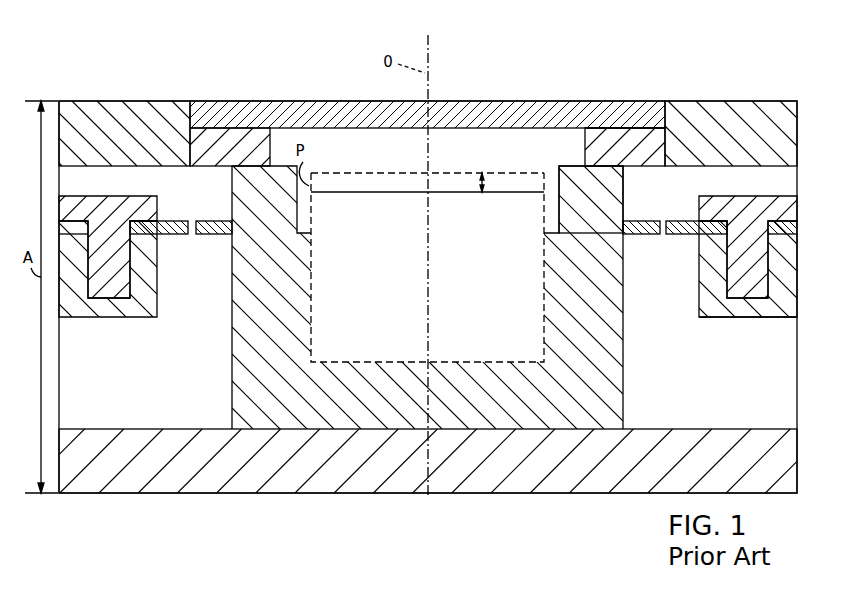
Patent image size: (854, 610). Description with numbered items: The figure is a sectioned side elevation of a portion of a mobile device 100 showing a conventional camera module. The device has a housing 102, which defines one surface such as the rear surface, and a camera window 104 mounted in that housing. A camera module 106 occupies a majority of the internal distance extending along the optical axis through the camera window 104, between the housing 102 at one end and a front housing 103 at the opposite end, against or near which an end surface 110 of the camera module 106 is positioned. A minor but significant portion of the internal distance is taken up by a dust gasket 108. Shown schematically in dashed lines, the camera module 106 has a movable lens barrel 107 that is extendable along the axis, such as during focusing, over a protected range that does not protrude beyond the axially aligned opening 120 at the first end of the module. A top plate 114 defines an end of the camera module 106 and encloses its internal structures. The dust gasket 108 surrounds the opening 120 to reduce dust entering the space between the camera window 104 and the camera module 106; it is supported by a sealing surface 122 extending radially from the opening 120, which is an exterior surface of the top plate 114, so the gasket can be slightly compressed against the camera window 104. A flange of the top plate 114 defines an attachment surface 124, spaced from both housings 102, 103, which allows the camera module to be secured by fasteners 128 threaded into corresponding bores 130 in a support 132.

The mobile device 100 is at (688, 52).
The housing 102 is at (731, 101).
The front housing 103 is at (510, 494).
The camera window 104 is at (460, 100).
The camera module 106 is at (232, 347).
The lens barrel 107 is at (389, 172).
The dust gasket 108 is at (605, 128).
The end surface 110 is at (396, 428).
The top plate 114 is at (627, 193).
The opening 120 is at (557, 176).
The sealing surface 122 is at (637, 170).
The attachment surface 124 is at (699, 221).
The fastener 128 is at (728, 196).
The bore 130 is at (728, 297).
The support 132 is at (735, 318).